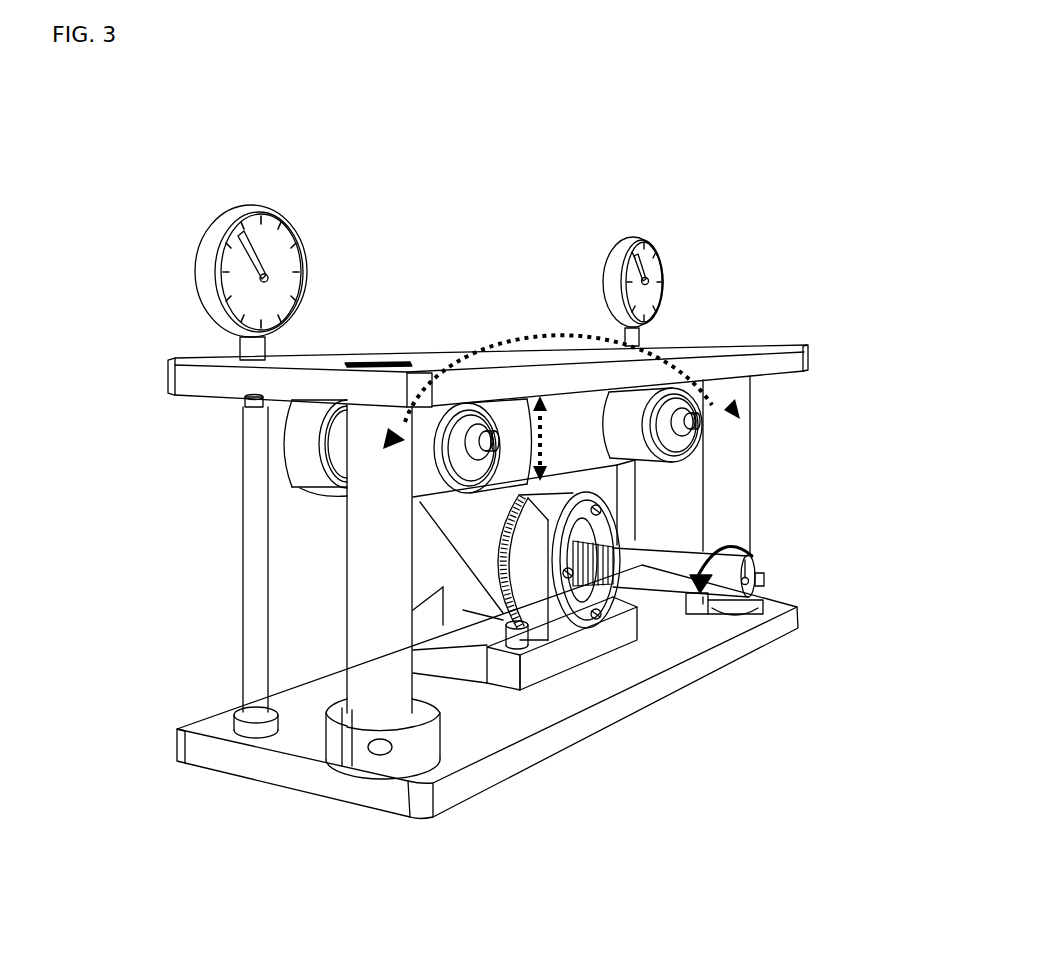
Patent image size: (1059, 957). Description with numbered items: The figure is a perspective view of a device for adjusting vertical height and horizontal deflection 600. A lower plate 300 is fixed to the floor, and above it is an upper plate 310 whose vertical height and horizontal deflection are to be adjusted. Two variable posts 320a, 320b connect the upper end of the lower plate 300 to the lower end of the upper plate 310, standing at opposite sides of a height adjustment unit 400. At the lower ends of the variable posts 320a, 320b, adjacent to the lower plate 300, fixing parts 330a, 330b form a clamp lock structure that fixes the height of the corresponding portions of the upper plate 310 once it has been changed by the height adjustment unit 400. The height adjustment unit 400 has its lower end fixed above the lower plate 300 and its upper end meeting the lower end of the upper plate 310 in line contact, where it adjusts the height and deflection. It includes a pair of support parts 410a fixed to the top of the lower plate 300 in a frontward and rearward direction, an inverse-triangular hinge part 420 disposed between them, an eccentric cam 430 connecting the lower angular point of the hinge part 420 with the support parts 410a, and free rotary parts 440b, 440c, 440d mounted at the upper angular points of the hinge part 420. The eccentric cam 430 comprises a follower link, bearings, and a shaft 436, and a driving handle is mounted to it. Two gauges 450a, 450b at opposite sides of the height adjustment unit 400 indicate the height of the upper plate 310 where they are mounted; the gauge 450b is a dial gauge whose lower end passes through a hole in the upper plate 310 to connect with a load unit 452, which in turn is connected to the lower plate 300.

The device for adjusting vertical height and horizontal deflection 600 is at (95, 215).
The lower plate 300 is at (680, 673).
The upper plate 310 is at (758, 363).
The variable post 320a is at (733, 483).
The variable post 320b is at (372, 527).
The fixing part 330a is at (722, 607).
The fixing part 330b is at (363, 737).
The height adjustment unit 400 is at (563, 428).
The support part 410a is at (597, 637).
The inverse-triangular hinge part 420 is at (519, 500).
The eccentric cam 430 is at (518, 493).
The shaft 436 is at (747, 597).
The free rotary part 440b is at (293, 432).
The free rotary part 440c is at (712, 420).
The free rotary part 440d is at (435, 451).
The gauge 450a is at (653, 282).
The gauge 450b is at (248, 267).
The load unit 452 is at (252, 608).